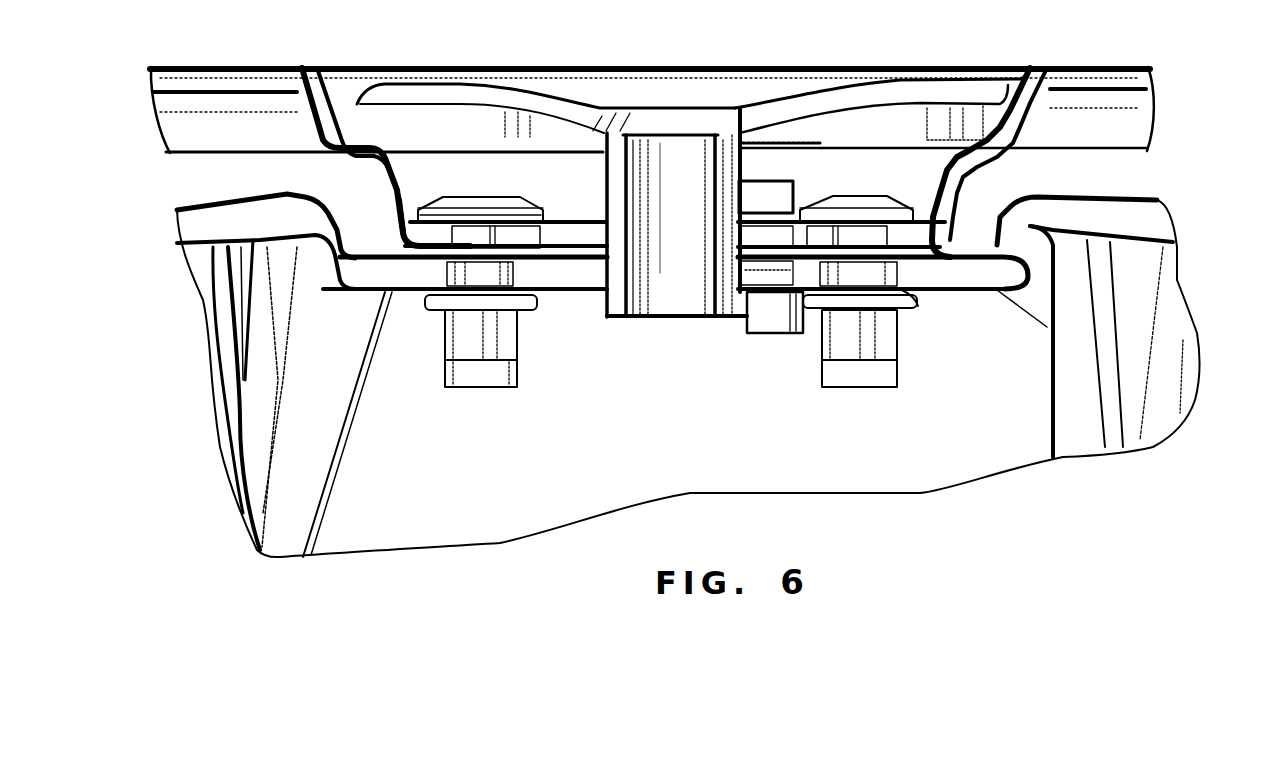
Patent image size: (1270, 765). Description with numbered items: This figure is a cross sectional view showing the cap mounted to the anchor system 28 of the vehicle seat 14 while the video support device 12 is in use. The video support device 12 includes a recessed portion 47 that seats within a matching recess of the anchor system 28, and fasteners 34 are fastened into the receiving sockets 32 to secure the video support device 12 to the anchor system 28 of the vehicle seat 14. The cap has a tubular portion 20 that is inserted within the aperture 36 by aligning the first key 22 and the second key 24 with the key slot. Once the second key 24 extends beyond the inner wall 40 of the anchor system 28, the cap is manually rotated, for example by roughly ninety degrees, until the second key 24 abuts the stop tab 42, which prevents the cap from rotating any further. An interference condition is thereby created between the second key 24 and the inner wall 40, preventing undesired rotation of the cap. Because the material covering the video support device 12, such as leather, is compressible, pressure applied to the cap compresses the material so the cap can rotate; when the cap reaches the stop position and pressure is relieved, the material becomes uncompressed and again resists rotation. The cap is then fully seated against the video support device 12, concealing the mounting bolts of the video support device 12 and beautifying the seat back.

The video support device 12 is at (1133, 125).
The vehicle seat 14 is at (1147, 287).
The tubular portion 20 is at (723, 137).
The first key 22 is at (795, 188).
The second key 24 is at (810, 312).
The anchor system 28 is at (1017, 158).
The receiving sockets 32 is at (463, 343).
The fasteners 34 is at (482, 203).
The aperture 36 is at (598, 270).
The inner wall 40 is at (948, 292).
The stop tab 42 is at (782, 322).
The recessed portion 47 is at (425, 190).